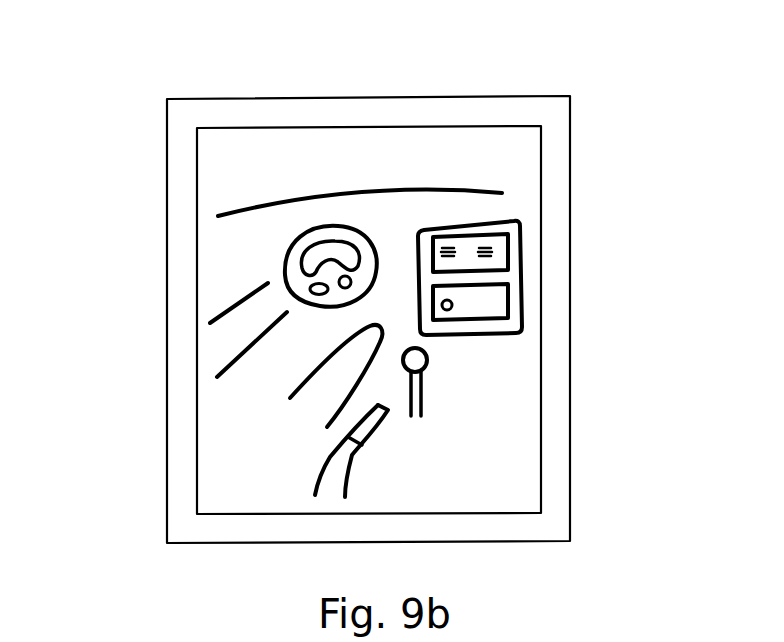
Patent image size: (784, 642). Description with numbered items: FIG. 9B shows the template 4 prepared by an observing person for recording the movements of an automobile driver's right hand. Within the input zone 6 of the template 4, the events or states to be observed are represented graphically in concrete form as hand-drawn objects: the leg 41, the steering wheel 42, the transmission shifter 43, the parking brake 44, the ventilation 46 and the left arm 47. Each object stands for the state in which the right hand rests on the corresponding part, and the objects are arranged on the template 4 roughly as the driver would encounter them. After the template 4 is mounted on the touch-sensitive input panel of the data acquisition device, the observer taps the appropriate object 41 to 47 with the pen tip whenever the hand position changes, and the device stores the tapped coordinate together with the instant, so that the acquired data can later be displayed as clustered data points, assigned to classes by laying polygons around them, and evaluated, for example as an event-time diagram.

The template 4 is at (552, 138).
The input zone 6 is at (281, 147).
The leg 41 is at (312, 403).
The steering wheel 42 is at (285, 282).
The transmission shifter 43 is at (413, 362).
The parking brake 44 is at (328, 482).
The ventilation 46 is at (497, 250).
The left arm 47 is at (220, 342).